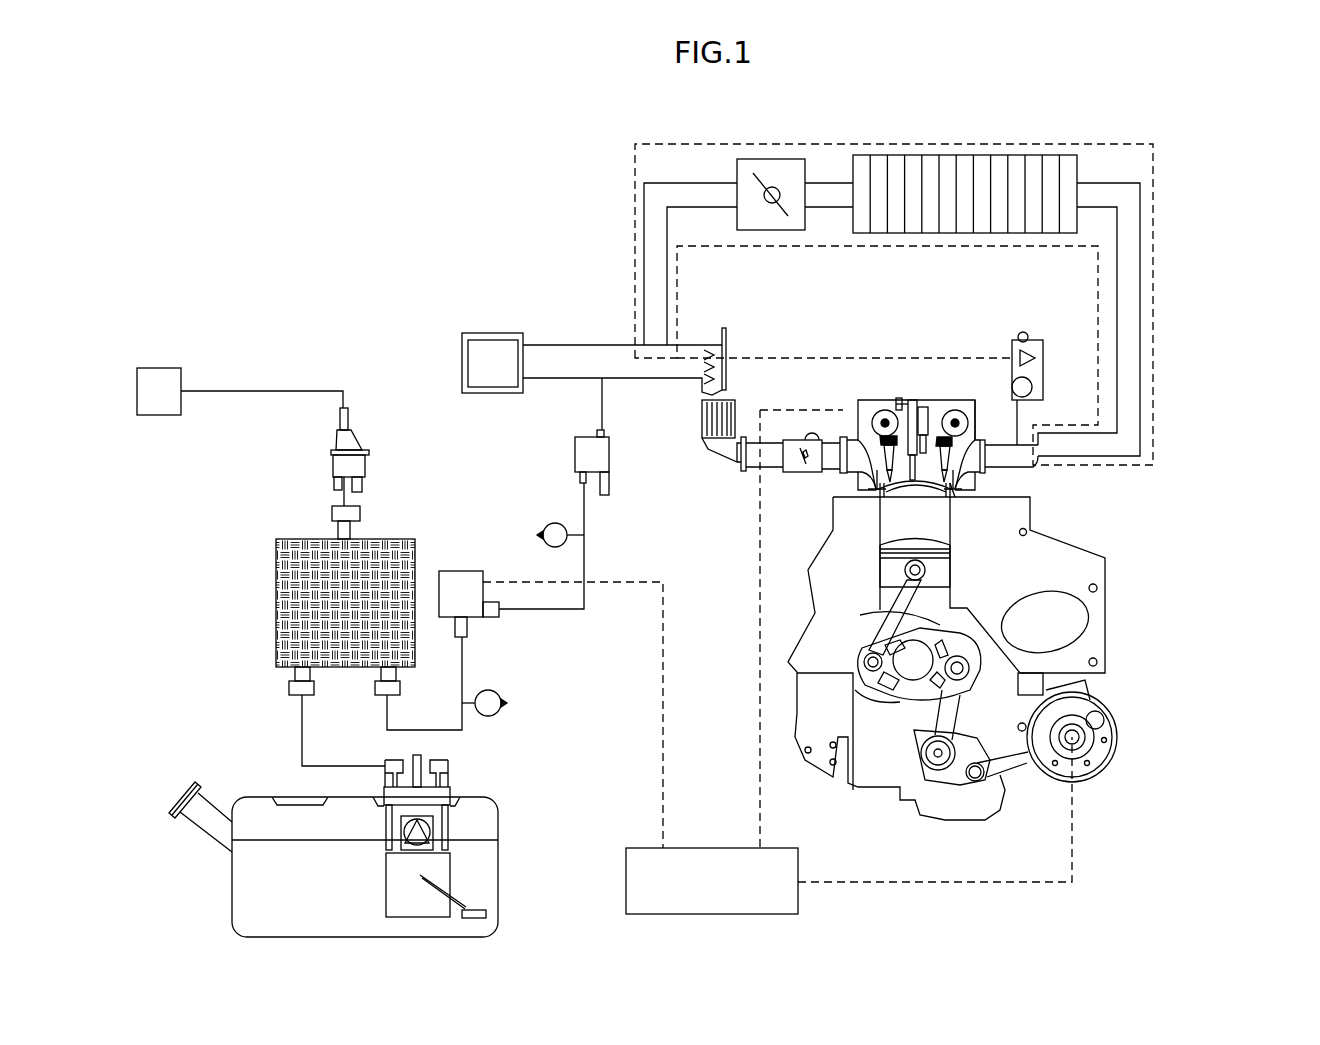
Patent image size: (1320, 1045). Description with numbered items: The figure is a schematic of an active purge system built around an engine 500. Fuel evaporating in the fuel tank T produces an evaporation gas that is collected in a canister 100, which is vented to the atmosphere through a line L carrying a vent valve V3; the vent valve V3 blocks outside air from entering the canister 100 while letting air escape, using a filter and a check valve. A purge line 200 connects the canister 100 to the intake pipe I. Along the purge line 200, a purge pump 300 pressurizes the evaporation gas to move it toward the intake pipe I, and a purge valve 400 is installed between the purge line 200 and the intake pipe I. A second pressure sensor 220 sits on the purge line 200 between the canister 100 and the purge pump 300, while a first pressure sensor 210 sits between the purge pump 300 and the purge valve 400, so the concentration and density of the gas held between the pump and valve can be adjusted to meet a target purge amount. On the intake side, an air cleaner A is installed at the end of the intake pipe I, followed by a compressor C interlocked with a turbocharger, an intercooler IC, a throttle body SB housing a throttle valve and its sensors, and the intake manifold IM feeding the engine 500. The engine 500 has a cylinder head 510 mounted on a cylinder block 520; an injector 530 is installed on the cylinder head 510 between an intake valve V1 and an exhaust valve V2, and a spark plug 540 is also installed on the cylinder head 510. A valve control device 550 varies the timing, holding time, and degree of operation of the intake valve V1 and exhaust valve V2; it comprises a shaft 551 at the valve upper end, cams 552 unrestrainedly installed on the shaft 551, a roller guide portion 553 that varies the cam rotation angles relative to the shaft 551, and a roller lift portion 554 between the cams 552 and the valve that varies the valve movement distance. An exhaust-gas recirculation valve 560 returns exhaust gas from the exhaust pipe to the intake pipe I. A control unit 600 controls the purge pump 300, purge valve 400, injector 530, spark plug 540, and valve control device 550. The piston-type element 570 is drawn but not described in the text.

The line L is at (262, 390).
The vent valve V3 is at (333, 463).
The canister 100 is at (280, 607).
The purge line 200 is at (513, 609).
The purge pump 300 is at (460, 570).
The purge valve 400 is at (578, 453).
The first pressure sensor 210 is at (557, 533).
The second pressure sensor 220 is at (491, 708).
The fuel tank T is at (498, 880).
The air cleaner A is at (493, 357).
The intake pipe I is at (617, 358).
The compressor C is at (720, 343).
The intercooler IC is at (703, 420).
The throttle body SB is at (795, 456).
The intake manifold IM is at (865, 457).
The cams 552 is at (872, 410).
The roller guide portion 553 is at (895, 398).
The valve control device 550 is at (905, 385).
The roller lift portion 554 is at (926, 408).
The shaft 551 is at (949, 412).
The intake valve V1 is at (880, 482).
The exhaust valve V2 is at (982, 480).
The exhaust-gas recirculation (EGR) valve 560 is at (1153, 298).
The cylinder head 510 is at (982, 432).
The engine 500 is at (1017, 650).
The cylinder block 520 is at (1045, 575).
The injector 530 is at (903, 498).
The spark plug 540 is at (930, 482).
The piston 570 is at (888, 567).
The control unit 600 is at (725, 848).